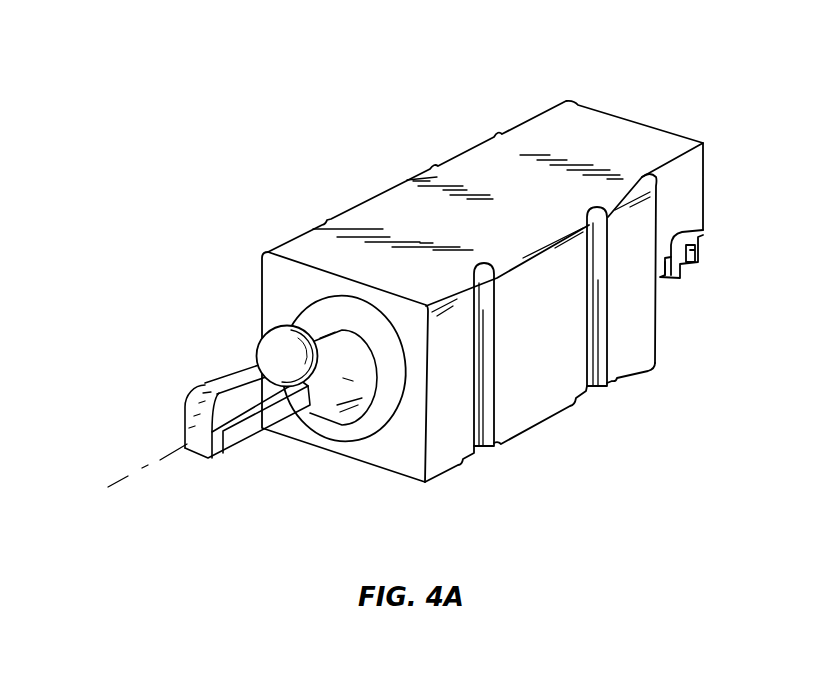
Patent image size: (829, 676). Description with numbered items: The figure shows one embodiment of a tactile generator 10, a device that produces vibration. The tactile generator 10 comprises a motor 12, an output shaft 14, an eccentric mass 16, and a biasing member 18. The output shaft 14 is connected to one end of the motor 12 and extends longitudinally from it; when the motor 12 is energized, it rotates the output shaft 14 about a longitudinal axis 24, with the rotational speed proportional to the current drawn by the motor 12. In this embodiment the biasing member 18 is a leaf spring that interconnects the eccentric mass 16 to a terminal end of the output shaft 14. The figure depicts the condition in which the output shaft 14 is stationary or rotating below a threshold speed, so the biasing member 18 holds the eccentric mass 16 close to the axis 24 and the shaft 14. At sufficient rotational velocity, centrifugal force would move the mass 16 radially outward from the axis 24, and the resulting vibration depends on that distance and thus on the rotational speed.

The tactile generator 10 is at (397, 277).
The motor 12 is at (503, 177).
The output shaft 14 is at (242, 432).
The eccentric mass 16 is at (277, 353).
The biasing member 18 is at (204, 384).
The longitudinal axis 24 is at (122, 477).